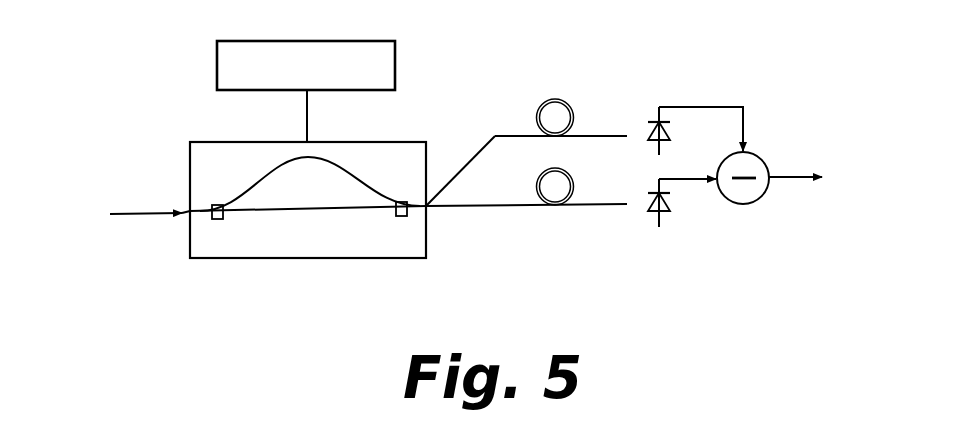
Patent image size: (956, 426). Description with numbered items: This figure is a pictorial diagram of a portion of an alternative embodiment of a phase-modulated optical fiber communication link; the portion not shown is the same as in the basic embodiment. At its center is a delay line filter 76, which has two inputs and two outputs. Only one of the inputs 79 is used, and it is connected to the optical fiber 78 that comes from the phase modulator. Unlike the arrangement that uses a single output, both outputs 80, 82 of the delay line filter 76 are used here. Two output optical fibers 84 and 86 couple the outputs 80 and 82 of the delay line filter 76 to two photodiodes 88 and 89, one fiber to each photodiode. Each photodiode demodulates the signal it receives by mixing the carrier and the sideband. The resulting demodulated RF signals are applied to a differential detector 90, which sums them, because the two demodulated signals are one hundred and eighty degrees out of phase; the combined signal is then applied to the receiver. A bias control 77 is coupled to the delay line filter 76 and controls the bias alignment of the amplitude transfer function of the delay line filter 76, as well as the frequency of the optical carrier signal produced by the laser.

The delay line filter 76 is at (407, 145).
The bias control 77 is at (217, 63).
The optical fiber 78 is at (123, 213).
The input 79 is at (173, 212).
The output 80 is at (426, 206).
The output 82 is at (426, 207).
The output optical fiber 84 is at (503, 136).
The output optical fiber 86 is at (468, 205).
The photodiode 88 is at (668, 205).
The photodiode 89 is at (668, 131).
The differential detector 90 is at (767, 158).